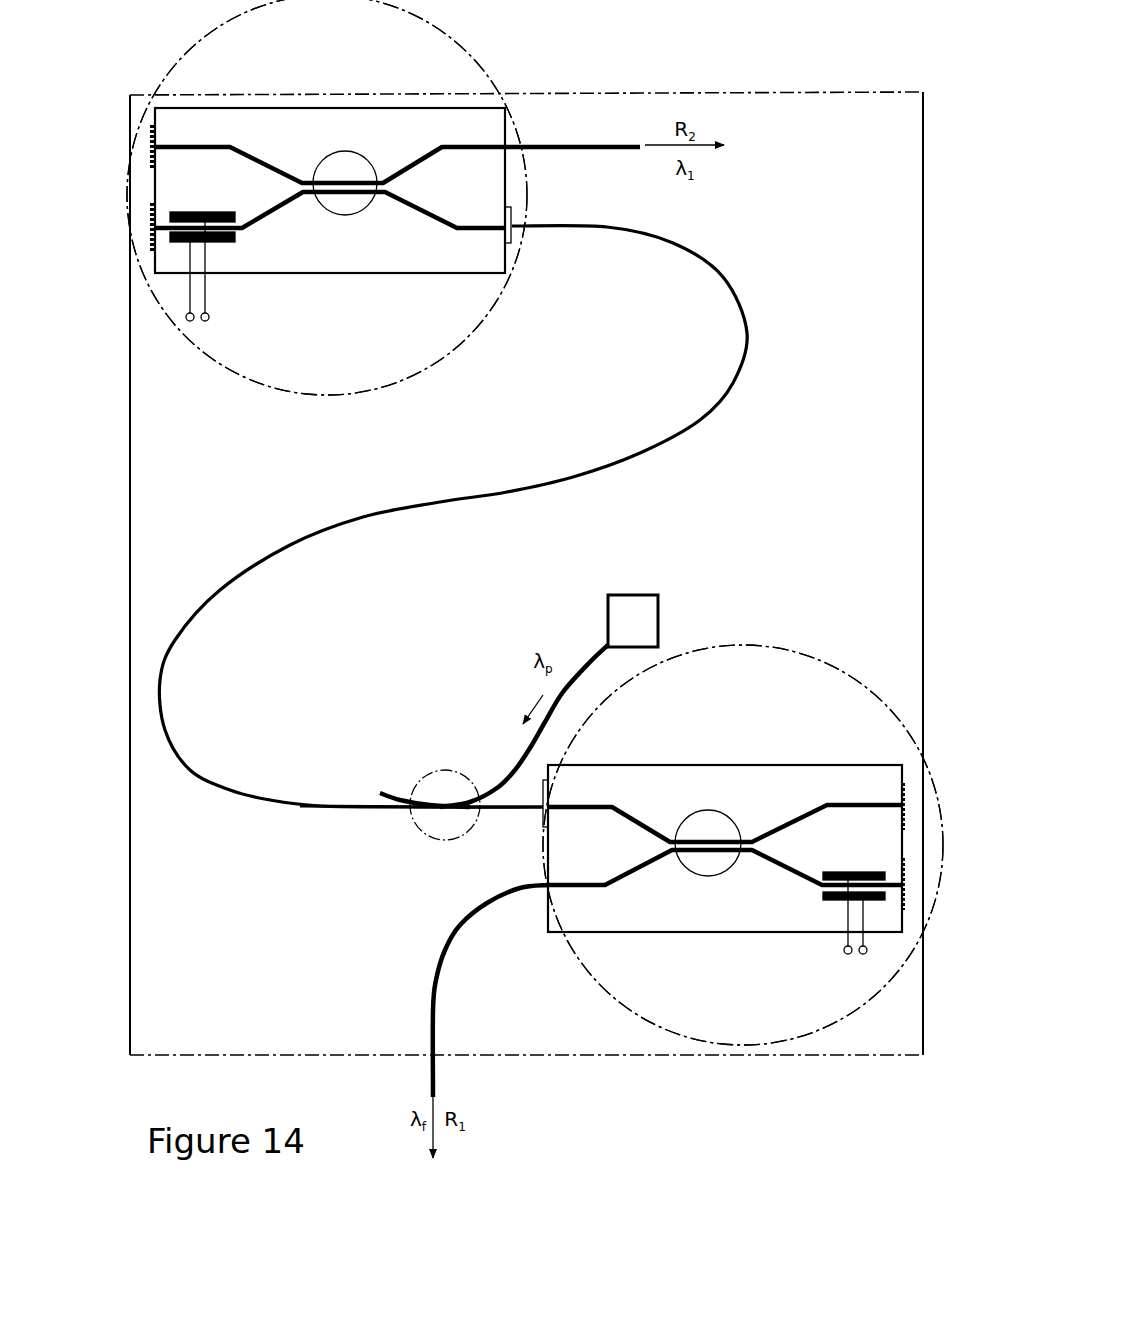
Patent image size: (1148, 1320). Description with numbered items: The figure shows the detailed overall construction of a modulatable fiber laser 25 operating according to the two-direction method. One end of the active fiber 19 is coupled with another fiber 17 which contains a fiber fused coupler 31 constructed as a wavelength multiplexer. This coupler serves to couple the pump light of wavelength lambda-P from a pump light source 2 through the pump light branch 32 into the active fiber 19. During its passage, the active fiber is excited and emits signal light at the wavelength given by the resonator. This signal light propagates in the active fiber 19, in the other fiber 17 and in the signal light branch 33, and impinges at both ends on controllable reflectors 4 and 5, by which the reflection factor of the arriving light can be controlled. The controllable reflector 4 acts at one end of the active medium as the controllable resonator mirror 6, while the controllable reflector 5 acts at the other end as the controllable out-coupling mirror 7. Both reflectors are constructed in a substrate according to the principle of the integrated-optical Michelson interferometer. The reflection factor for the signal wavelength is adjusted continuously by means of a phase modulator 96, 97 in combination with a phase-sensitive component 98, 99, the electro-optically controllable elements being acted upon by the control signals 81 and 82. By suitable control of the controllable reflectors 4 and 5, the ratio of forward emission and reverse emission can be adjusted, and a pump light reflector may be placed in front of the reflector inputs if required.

The modulatable fiber laser 25 is at (820, 92).
The controllable reflector 4 is at (470, 340).
The controllable resonator mirror 6 is at (470, 340).
The controllable reflector 5 is at (797, 653).
The controllable out-coupling mirror 7 is at (797, 653).
The phase-sensitive component 98 is at (365, 163).
The phase-sensitive component 99 is at (688, 818).
The phase modulator 96 is at (232, 240).
The phase modulator 97 is at (822, 895).
The control signal 81 is at (214, 277).
The control signal 82 is at (855, 935).
The active fiber 19 is at (363, 517).
The pump light source 2 is at (640, 595).
The pump light branch 32 is at (503, 783).
The fiber fused coupler 31 is at (437, 840).
The other fiber 17 is at (366, 808).
The signal light branch 33 is at (498, 812).